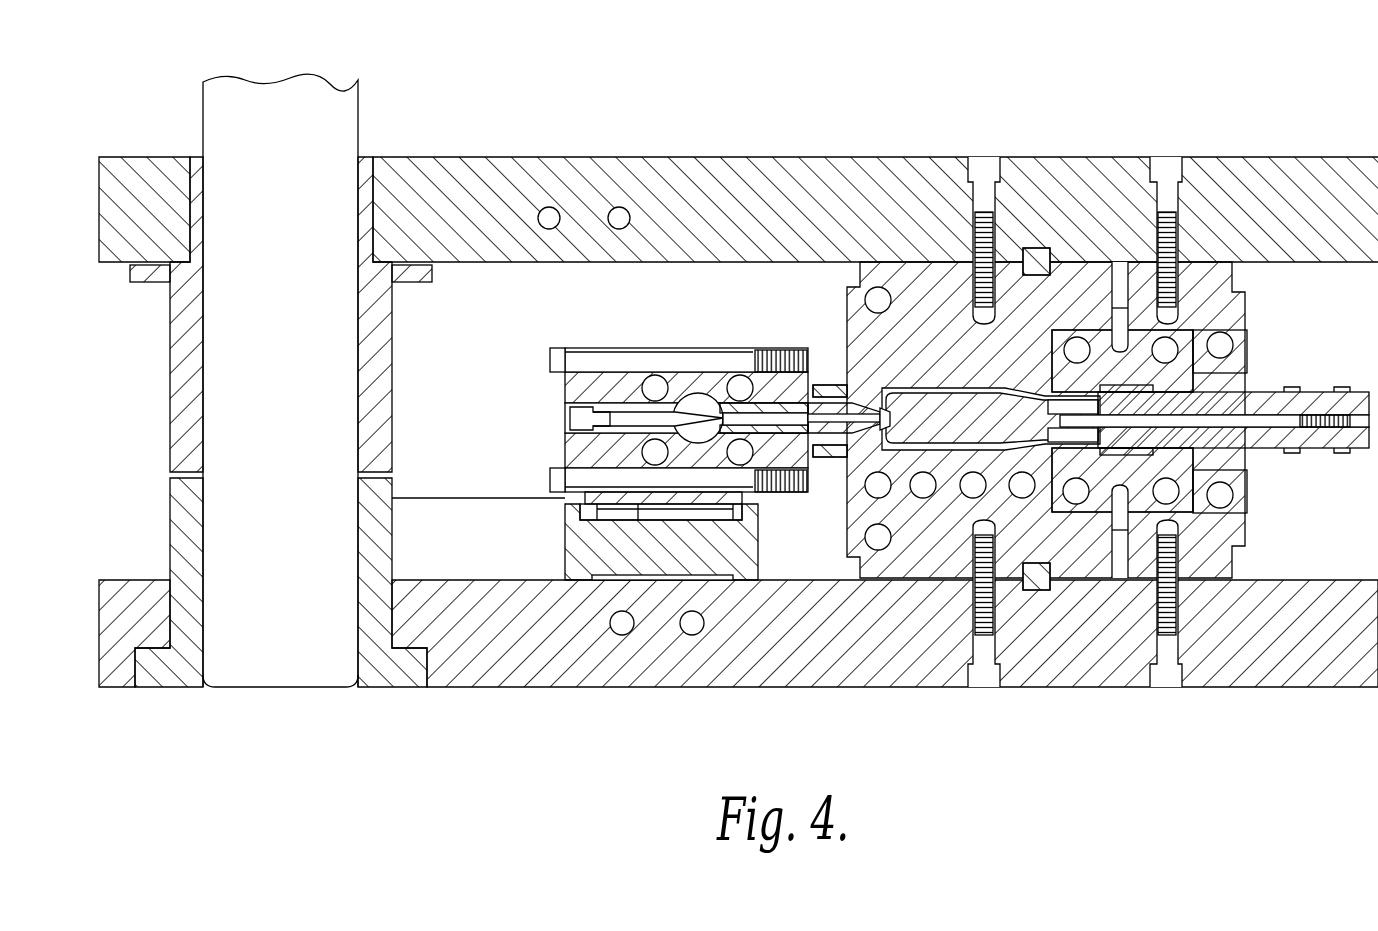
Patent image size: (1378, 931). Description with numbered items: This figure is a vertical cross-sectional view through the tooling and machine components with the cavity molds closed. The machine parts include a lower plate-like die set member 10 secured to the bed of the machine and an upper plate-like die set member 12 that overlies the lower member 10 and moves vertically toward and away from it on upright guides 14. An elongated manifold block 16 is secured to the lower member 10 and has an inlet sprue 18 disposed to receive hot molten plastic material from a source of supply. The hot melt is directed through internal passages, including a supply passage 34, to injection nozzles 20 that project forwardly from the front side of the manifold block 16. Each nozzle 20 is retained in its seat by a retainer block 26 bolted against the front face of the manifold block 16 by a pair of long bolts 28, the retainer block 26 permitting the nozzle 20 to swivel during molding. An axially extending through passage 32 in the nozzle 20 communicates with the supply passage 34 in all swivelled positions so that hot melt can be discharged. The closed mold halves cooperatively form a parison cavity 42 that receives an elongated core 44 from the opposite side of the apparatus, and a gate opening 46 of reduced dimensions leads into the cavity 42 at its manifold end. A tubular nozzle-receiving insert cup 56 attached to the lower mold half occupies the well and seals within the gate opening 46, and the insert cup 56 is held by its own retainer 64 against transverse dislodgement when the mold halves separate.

The lower plate-like die set member 10 is at (652, 688).
The upper plate-like die set member 12 is at (760, 170).
The upright guides 14 is at (290, 103).
The manifold block 16 is at (568, 386).
The inlet sprue 18 is at (566, 437).
The injection nozzle 20 is at (812, 433).
The retainer block 26 is at (790, 378).
The long bolts 28 is at (598, 360).
The through passage 32 is at (790, 422).
The supply passage 34 is at (727, 420).
The parison cavity 42 is at (968, 403).
The elongated core 44 is at (955, 433).
The gate opening 46 is at (882, 410).
The nozzle-receiving insert cup 56 is at (832, 385).
The retainer 64 is at (836, 457).